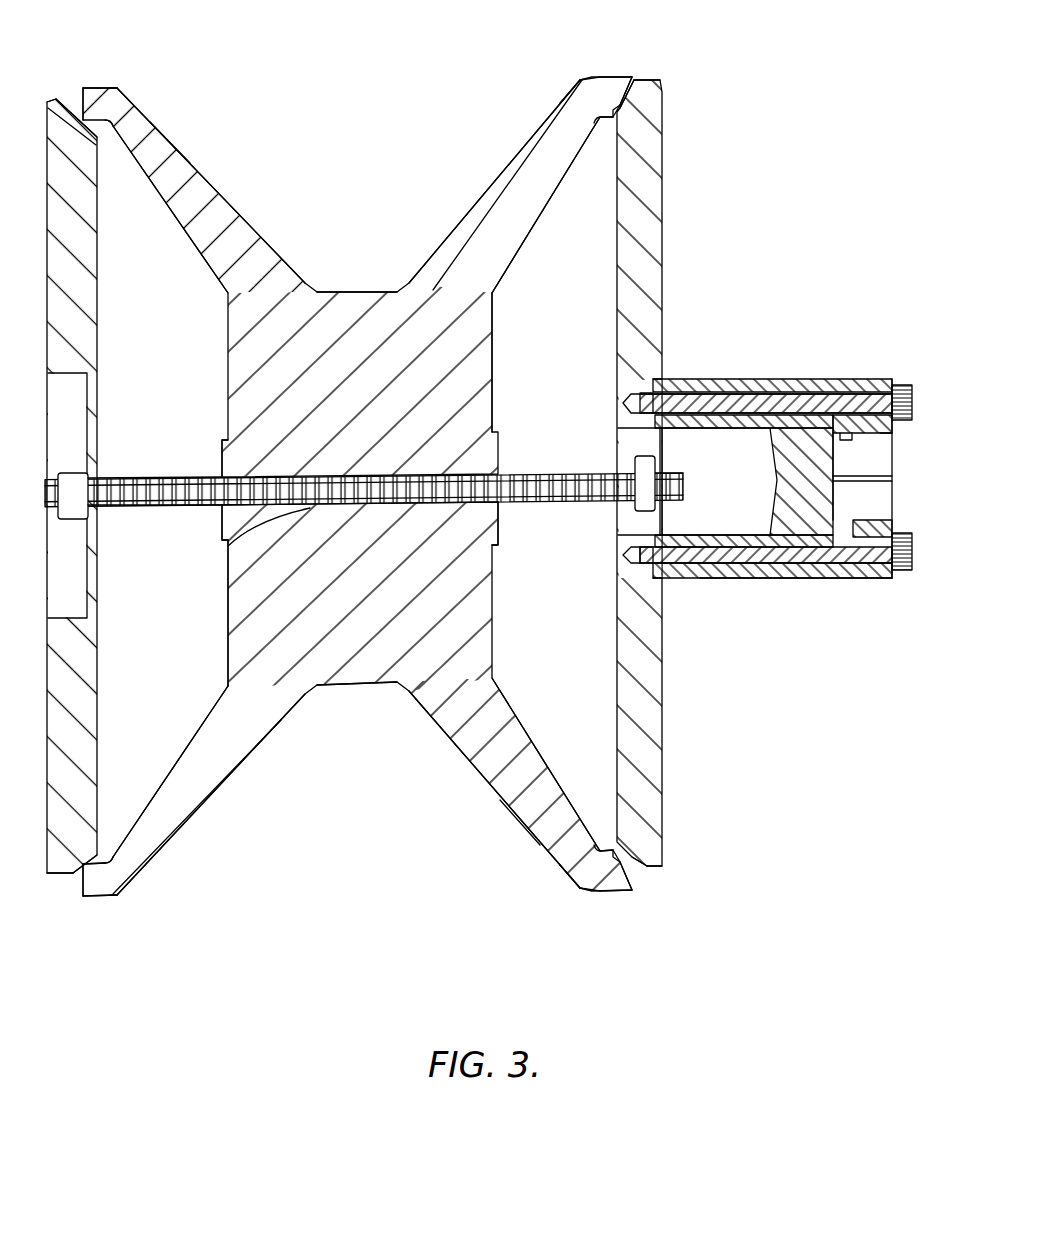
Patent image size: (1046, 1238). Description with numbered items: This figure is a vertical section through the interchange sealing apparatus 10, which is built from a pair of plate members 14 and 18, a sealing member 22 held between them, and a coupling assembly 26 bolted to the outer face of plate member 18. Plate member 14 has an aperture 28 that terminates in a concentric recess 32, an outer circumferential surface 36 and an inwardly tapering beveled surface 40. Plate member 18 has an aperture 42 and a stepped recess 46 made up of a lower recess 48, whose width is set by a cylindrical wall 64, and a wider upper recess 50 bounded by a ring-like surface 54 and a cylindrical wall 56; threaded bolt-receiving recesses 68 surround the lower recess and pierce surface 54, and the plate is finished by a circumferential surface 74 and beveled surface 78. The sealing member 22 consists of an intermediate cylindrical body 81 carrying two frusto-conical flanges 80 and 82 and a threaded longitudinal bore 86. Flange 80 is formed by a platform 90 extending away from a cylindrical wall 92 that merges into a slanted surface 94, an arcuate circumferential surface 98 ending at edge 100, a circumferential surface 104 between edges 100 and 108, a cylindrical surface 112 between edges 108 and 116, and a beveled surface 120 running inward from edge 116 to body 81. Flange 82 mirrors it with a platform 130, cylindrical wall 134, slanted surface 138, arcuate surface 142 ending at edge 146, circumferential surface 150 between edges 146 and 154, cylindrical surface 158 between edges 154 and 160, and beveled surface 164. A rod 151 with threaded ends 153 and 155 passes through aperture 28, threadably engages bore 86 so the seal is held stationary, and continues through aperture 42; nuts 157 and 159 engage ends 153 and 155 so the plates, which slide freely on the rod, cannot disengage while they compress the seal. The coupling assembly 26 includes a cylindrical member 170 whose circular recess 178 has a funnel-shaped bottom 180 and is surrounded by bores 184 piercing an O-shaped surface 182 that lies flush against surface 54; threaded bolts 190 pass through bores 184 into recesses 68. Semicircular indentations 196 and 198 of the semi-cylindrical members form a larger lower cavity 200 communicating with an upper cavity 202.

The apparatus 10 is at (437, 164).
The plate member 14 is at (80, 283).
The plate member 18 is at (662, 232).
The sealing member 22 is at (357, 686).
The coupling assembly 26 is at (777, 374).
The aperture 28 is at (103, 477).
The recess 32 is at (55, 616).
The circumferential surface 36 is at (50, 100).
The beveled surface 40 is at (72, 104).
The aperture 42 is at (637, 503).
The recess 46 is at (664, 557).
The lower recess 48 is at (641, 520).
The upper recess 50 is at (665, 439).
The surface 54 is at (642, 414).
The cylindrical wall 56 is at (665, 377).
The cylindrical wall 64 is at (647, 428).
The threaded bolt-receiving recesses 68 is at (626, 398).
The circumferential surface 74 is at (662, 80).
The beveled surface 78 is at (638, 92).
The flange 80 is at (186, 140).
The intermediate cylindrical body 81 is at (355, 289).
The flange 82 is at (514, 810).
The threaded longitudinal bore 86 is at (227, 545).
The platform 90 is at (224, 445).
The cylindrical wall 92 is at (228, 618).
The slanted surface 94 is at (184, 230).
The arcuate circumferential surface 98 is at (110, 128).
The edge 100 is at (90, 860).
The circumferential surface 104 is at (86, 896).
The edge 108 is at (83, 88).
The cylindrical surface 112 is at (100, 88).
The edge 116 is at (120, 90).
The beveled surface 120 is at (201, 174).
The platform 130 is at (499, 532).
The cylindrical wall 134 is at (493, 345).
The slanted surface 138 is at (533, 228).
The arcuate circumferential surface 142 is at (598, 122).
The edge 146 is at (610, 75).
The circumferential surface 150 is at (630, 95).
The rod 151 is at (210, 498).
The threaded end 153 is at (115, 497).
The edge 154 is at (628, 100).
The threaded end 155 is at (646, 487).
The nut 157 is at (75, 490).
The cylindrical surface 158 is at (593, 77).
The nut 159 is at (634, 488).
The edge 160 is at (572, 92).
The beveled surface 164 is at (450, 234).
The cylindrical member 170 is at (760, 581).
The circular recess 178 is at (724, 468).
The funnel-shaped bottom 180 is at (776, 482).
The O-shaped surface 182 is at (640, 389).
The bores 184 is at (700, 380).
The threaded bolts 190 is at (902, 385).
The semicircular indentation 196 is at (842, 434).
The semicircular indentation 198 is at (884, 434).
The lower cavity 200 is at (858, 497).
The upper cavity 202 is at (882, 469).